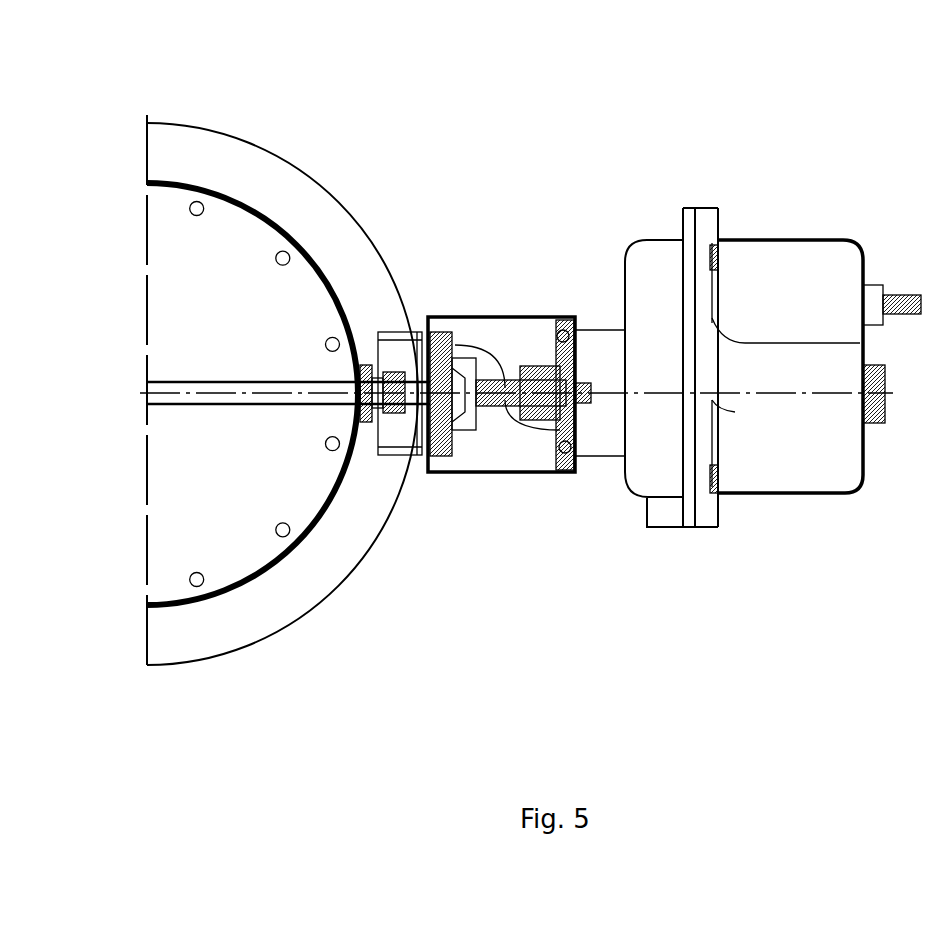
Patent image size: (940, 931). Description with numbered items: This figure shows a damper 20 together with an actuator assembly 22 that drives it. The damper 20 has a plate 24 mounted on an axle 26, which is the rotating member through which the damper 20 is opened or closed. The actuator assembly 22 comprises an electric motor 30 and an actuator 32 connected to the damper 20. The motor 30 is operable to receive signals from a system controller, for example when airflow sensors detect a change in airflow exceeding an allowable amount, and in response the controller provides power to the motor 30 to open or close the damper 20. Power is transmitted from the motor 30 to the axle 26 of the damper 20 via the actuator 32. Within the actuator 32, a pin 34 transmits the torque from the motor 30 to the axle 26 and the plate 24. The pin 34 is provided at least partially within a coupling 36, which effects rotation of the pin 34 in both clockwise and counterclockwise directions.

The damper 20 is at (200, 110).
The actuator assembly 22 is at (675, 160).
The plate 24 is at (185, 270).
The axle 26 is at (158, 398).
The electric motor 30 is at (835, 245).
The actuator 32 is at (477, 315).
The pin 34 is at (498, 405).
The coupling 36 is at (530, 365).